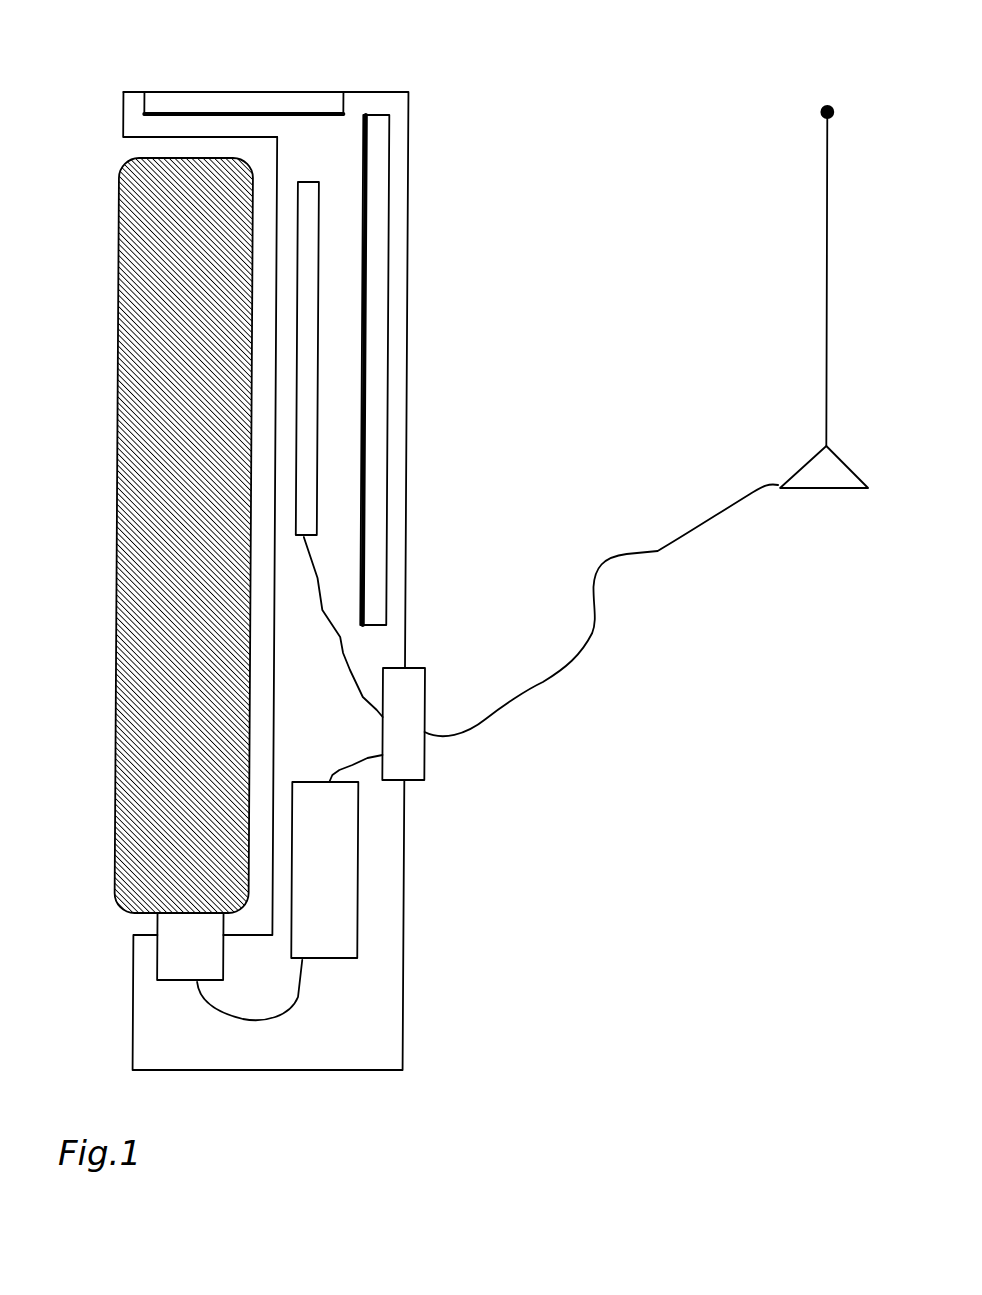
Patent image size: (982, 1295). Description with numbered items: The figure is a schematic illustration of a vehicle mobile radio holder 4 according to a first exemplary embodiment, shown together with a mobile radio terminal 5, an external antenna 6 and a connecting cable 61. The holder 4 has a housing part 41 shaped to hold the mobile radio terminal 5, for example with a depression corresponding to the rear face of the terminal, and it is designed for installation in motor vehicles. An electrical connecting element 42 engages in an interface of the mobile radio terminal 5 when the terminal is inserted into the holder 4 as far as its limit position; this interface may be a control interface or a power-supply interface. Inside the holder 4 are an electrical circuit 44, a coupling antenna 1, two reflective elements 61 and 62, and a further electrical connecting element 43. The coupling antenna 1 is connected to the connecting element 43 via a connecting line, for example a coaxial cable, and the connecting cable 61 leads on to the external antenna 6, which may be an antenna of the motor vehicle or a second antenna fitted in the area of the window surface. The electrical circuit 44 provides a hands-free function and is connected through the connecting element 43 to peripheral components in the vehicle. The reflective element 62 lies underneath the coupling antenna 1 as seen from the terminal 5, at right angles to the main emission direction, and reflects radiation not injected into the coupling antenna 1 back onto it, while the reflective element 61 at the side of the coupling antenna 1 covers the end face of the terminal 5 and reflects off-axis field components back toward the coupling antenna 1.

The coupling antenna 1 is at (318, 184).
The vehicle mobile radio holder 4 is at (386, 80).
The housing part 41 is at (123, 123).
The electrical connecting element 42 is at (158, 955).
The electrical connecting element 43 is at (420, 693).
The electrical circuit 44 is at (348, 873).
The mobile radio terminal 5 is at (127, 342).
The external antenna 6 is at (832, 337).
The reflective element 61 is at (243, 100).
The reflective element 62 is at (380, 200).